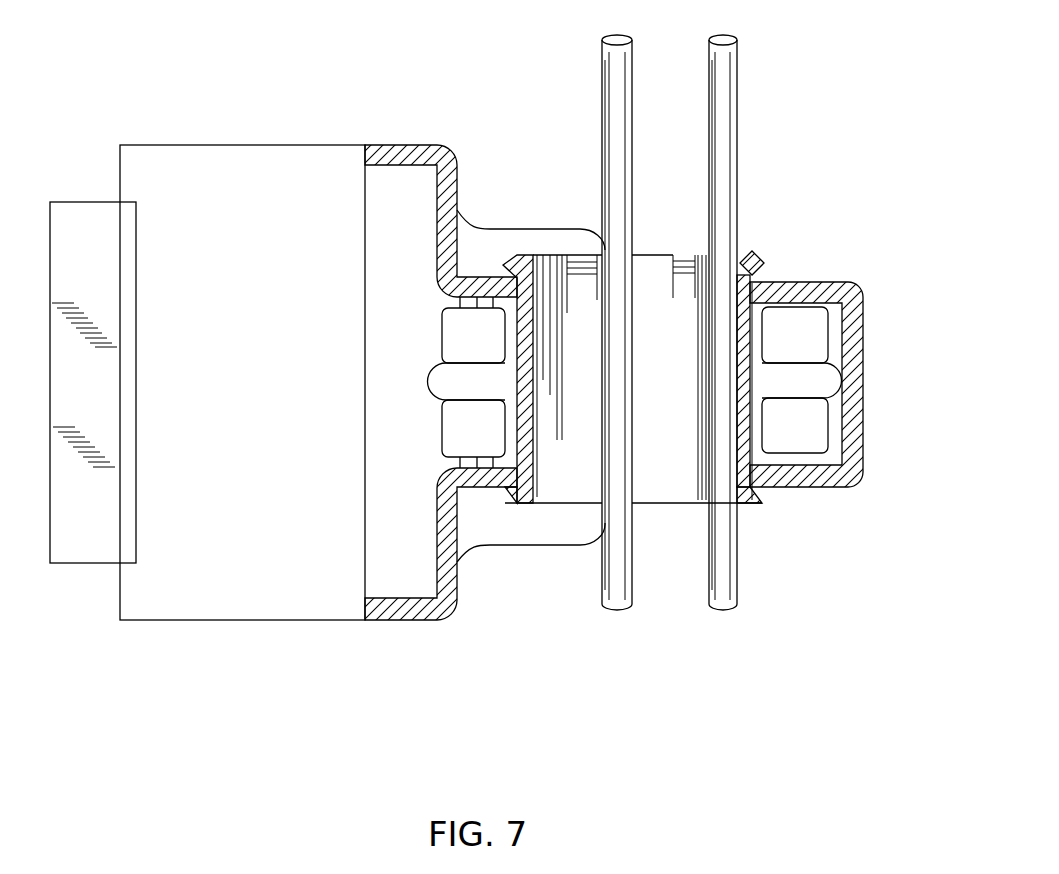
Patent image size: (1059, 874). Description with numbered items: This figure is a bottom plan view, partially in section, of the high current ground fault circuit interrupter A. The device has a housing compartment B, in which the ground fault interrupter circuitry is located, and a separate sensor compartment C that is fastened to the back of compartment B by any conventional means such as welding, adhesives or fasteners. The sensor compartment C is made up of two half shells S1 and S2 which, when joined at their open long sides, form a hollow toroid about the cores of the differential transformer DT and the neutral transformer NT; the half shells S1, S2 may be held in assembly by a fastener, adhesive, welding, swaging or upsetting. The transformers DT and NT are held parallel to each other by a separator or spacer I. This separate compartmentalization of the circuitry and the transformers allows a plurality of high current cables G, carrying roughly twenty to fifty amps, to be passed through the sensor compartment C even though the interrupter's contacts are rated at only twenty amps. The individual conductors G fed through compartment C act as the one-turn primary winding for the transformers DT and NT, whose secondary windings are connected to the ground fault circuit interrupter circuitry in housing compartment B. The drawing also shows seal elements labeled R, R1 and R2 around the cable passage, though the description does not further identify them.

The housing compartment B is at (265, 150).
The high current ground fault circuit interrupter A is at (518, 668).
The upper rubber boot / seal ring R2 is at (522, 250).
The lower rubber boot / seal ring R1 is at (518, 506).
The bearing / bushing R is at (572, 476).
The separator or spacer I is at (432, 381).
The high current cables G is at (630, 124).
The half shell S1 is at (789, 282).
The half shell S2 is at (787, 488).
The sensor compartment C is at (819, 279).
The neutral transformer NT is at (807, 443).
The differential transformer DT is at (805, 322).